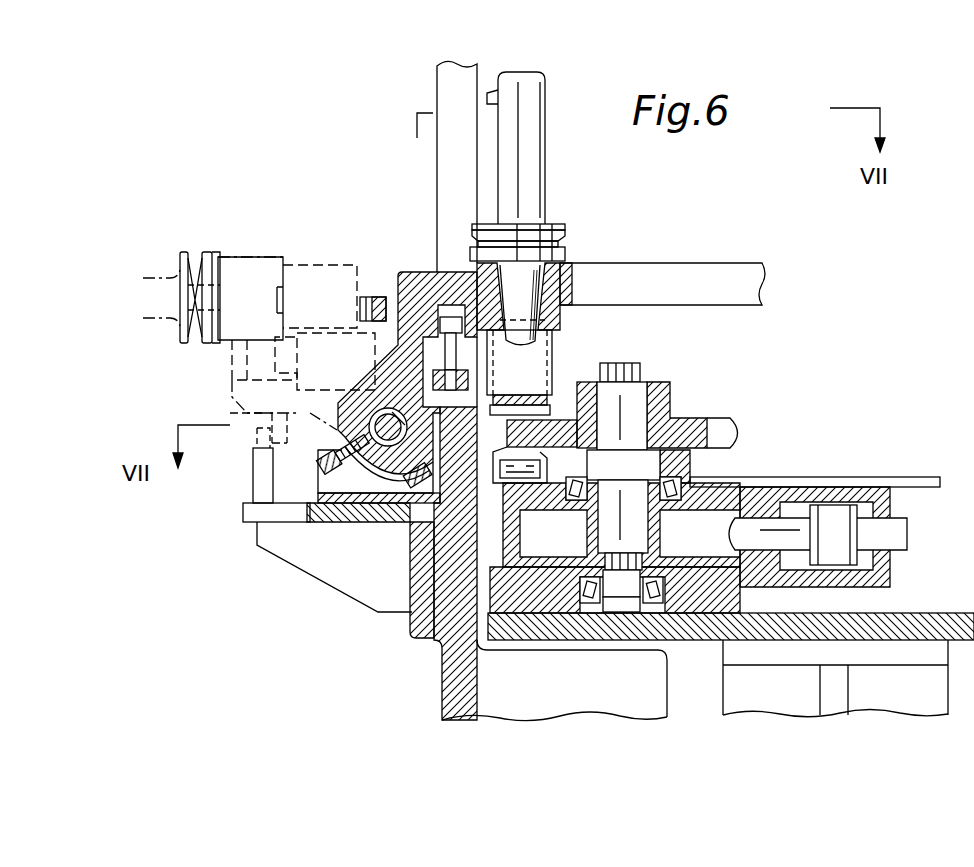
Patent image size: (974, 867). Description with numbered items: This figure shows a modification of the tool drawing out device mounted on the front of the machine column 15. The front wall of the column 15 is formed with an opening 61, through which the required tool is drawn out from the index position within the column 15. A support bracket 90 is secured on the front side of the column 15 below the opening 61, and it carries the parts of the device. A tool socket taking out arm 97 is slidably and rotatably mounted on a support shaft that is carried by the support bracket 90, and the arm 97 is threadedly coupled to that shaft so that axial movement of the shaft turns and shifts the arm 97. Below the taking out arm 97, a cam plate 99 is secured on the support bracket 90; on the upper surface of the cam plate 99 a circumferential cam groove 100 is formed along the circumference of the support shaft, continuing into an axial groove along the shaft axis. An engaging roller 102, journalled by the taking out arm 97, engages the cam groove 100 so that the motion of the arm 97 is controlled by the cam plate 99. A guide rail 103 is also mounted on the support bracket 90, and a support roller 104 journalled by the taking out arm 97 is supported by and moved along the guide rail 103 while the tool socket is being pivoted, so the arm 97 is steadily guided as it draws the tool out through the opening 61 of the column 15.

The column 15 is at (440, 666).
The opening 61 is at (400, 522).
The support bracket 90 is at (416, 588).
The tool socket taking out arm 97 is at (392, 278).
The cam plate 99 is at (365, 535).
The circumferential cam groove 100 is at (355, 522).
The engaging roller 102 is at (328, 470).
The guide rail 103 is at (253, 478).
The support roller 104 is at (360, 303).